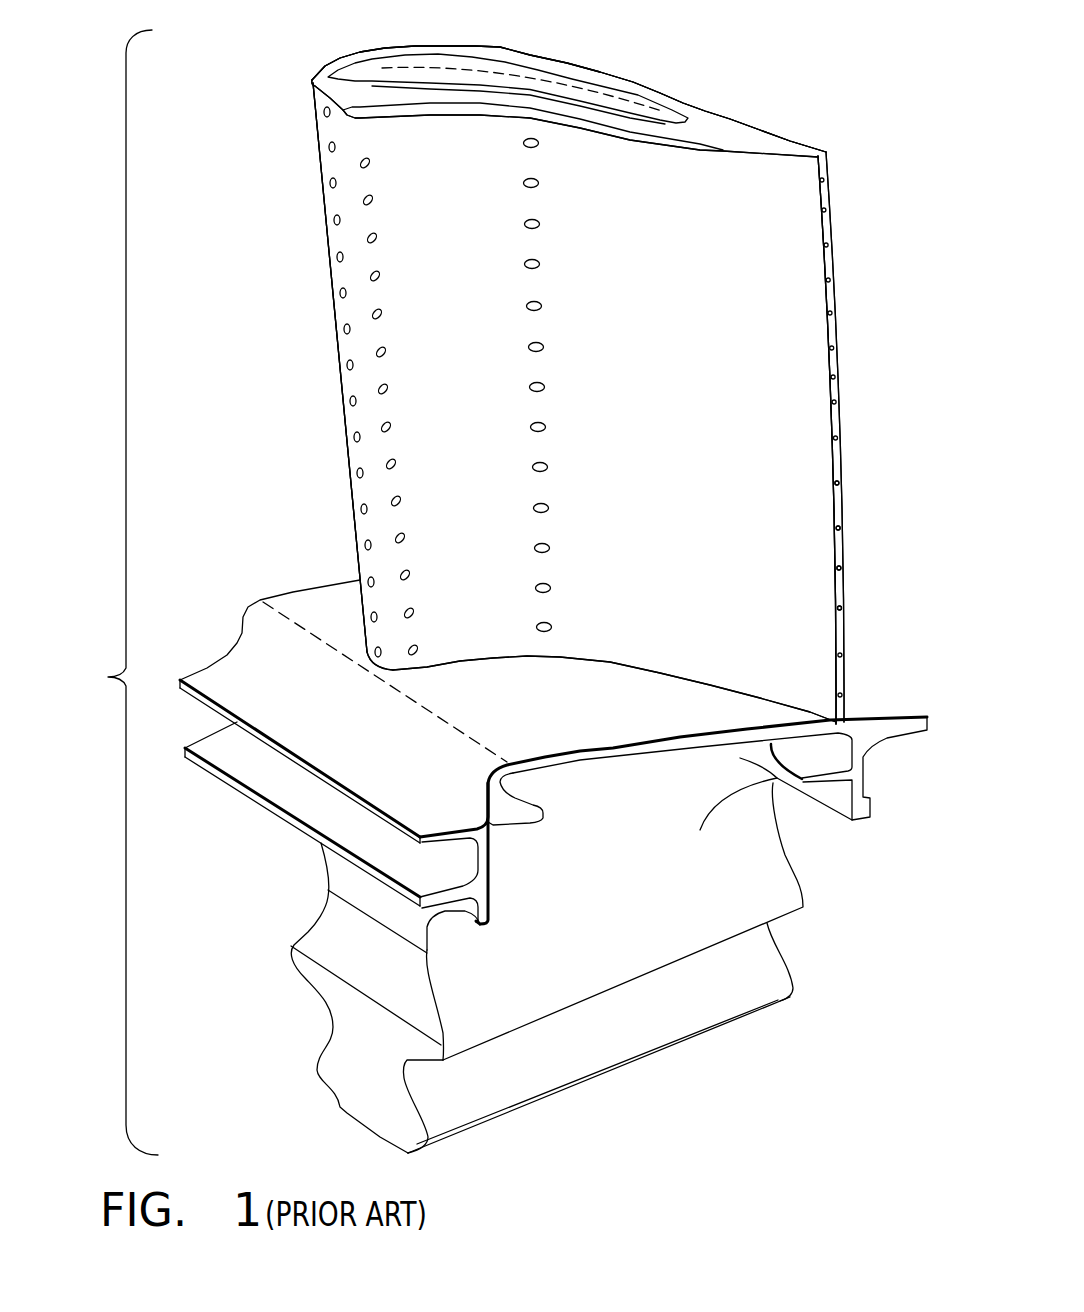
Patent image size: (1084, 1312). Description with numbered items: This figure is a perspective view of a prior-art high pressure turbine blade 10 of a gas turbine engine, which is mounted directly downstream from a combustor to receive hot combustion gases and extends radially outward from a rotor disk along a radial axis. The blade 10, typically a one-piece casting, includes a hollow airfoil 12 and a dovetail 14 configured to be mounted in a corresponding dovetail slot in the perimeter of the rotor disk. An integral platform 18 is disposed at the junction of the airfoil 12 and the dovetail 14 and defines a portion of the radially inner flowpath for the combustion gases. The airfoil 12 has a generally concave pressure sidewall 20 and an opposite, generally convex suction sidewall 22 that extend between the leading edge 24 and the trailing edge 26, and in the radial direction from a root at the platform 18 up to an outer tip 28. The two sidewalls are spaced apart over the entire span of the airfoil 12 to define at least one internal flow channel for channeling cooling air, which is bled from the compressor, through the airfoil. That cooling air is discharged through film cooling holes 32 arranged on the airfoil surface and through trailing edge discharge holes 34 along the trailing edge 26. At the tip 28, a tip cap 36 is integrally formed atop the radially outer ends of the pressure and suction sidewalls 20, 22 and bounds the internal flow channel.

The turbine blade 10 is at (108, 592).
The airfoil 12 is at (272, 191).
The dovetail 14 is at (278, 932).
The platform 18 is at (322, 603).
The pressure sidewall 20 is at (777, 330).
The suction sidewall 22 is at (748, 212).
The leading edge 24 is at (333, 312).
The trailing edge 26 is at (840, 418).
The outer tip 28 is at (700, 123).
The film cooling holes 32 is at (540, 267).
The trailing edge discharge holes 34 is at (840, 608).
The tip cap 36 is at (424, 84).